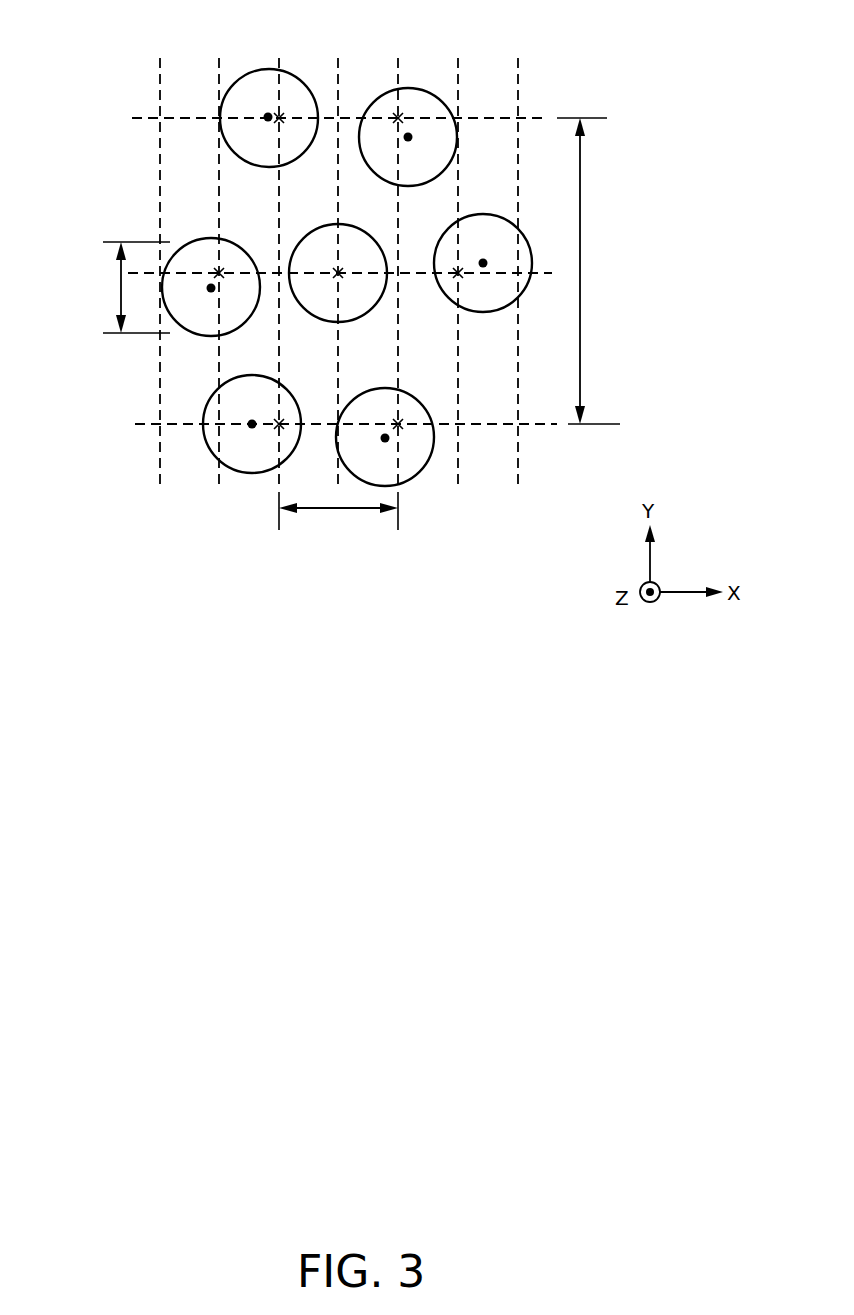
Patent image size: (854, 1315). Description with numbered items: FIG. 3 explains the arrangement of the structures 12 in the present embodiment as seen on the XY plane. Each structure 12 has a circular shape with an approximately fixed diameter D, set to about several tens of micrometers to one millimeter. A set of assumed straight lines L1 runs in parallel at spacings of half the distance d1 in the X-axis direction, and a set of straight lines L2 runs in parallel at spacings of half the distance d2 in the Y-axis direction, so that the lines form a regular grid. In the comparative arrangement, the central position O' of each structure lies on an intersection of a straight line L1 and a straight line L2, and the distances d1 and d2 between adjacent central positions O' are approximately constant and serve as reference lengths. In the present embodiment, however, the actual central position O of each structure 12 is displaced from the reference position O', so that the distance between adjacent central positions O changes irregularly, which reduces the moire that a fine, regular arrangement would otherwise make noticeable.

The structure 12 is at (415, 100).
The central position O is at (253, 63).
The central position O' is at (445, 482).
The straight line L1 is at (220, 473).
The straight line L2 is at (143, 425).
The diameter D is at (129, 287).
The distance d1 is at (338, 517).
The distance d2 is at (590, 271).